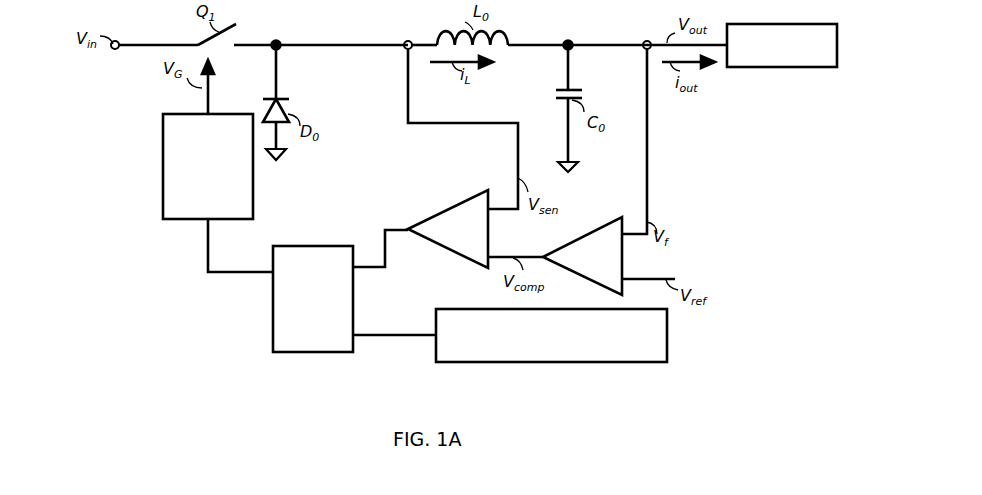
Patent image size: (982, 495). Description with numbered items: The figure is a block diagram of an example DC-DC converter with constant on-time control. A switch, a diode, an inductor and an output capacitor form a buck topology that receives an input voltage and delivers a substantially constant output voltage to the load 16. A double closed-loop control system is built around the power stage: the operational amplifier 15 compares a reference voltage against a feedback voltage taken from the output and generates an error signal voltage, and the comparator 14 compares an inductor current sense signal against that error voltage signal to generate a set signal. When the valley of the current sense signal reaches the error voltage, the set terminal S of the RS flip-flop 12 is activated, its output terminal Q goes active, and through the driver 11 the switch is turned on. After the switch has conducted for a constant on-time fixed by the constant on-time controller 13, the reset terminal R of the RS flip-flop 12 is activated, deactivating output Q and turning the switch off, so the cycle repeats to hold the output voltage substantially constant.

The driver 11 is at (198, 197).
The RS flip-flop 12 is at (292, 323).
The constant on-time controller 13 is at (630, 356).
The comparator 14 is at (466, 235).
The operational amplifier 15 is at (601, 269).
The load 16 is at (802, 56).